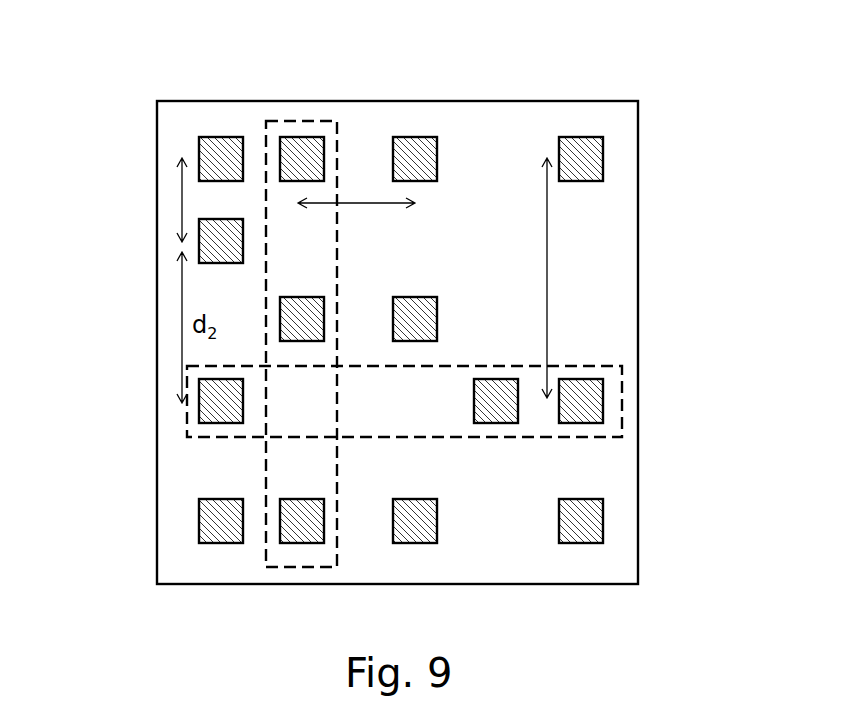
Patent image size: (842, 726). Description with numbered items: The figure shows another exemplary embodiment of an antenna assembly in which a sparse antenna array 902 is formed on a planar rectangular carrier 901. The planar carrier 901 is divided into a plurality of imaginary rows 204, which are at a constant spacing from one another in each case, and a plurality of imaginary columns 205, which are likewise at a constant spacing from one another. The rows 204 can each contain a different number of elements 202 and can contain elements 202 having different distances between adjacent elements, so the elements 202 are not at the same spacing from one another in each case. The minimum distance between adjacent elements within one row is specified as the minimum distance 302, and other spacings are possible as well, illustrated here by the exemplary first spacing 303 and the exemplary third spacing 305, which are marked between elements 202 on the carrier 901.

The elements 202 is at (297, 531).
The imaginary rows 204 is at (187, 418).
The imaginary columns 205 is at (302, 121).
The minimum distance d0 302 is at (173, 200).
The spacing d1 303 is at (355, 203).
The spacing d3 305 is at (548, 254).
The planar carrier 901 is at (639, 153).
The sparse antenna array 902 is at (620, 322).